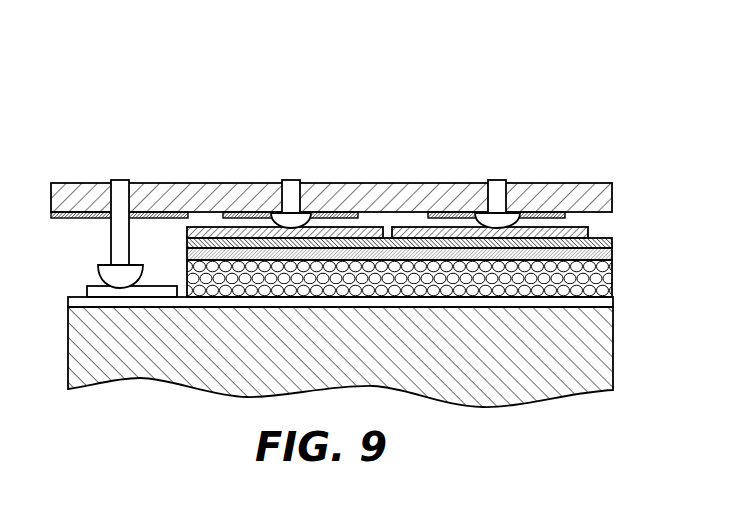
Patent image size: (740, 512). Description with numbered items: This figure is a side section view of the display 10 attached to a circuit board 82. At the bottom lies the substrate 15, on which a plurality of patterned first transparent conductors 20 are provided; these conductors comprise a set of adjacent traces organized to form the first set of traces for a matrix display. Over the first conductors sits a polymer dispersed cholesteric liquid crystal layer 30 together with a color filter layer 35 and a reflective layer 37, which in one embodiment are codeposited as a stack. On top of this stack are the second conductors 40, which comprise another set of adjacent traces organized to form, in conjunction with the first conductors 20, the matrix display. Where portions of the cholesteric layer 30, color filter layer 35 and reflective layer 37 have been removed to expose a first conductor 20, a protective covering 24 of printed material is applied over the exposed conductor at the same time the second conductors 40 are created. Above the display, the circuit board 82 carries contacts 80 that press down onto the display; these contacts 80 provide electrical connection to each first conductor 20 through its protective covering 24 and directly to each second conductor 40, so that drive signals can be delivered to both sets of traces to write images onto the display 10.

The display 10 is at (162, 87).
The substrate 15 is at (613, 361).
The first transparent conductor 20 is at (613, 301).
The protective covering 24 is at (88, 285).
The polymer dispersed cholesteric liquid crystal layer 30 is at (613, 283).
The color filter layer 35 is at (613, 253).
The reflective layer 37 is at (613, 244).
The second conductor 40 is at (593, 230).
The contact 80 is at (119, 180).
The circuit board 82 is at (593, 183).